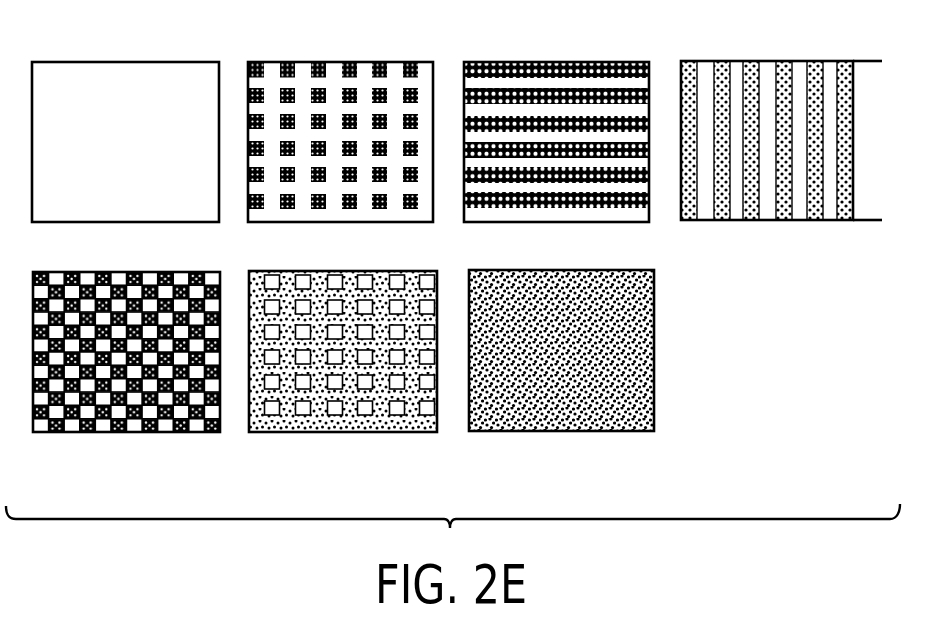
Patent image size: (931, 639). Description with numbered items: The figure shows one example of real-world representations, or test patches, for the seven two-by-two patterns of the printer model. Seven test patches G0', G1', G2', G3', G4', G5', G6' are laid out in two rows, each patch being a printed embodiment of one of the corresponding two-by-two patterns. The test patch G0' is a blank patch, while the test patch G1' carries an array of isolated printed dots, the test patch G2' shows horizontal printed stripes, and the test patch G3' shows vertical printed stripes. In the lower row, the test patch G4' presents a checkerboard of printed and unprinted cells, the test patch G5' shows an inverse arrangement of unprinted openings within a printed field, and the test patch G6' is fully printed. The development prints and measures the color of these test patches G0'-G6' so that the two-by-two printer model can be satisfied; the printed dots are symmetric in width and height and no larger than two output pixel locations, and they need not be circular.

The test patch G0' is at (125, 121).
The test patch G1' is at (340, 121).
The test patch G2' is at (556, 121).
The test patch G3' is at (781, 120).
The test patch G4' is at (126, 375).
The test patch G5' is at (343, 375).
The test patch G6' is at (561, 374).